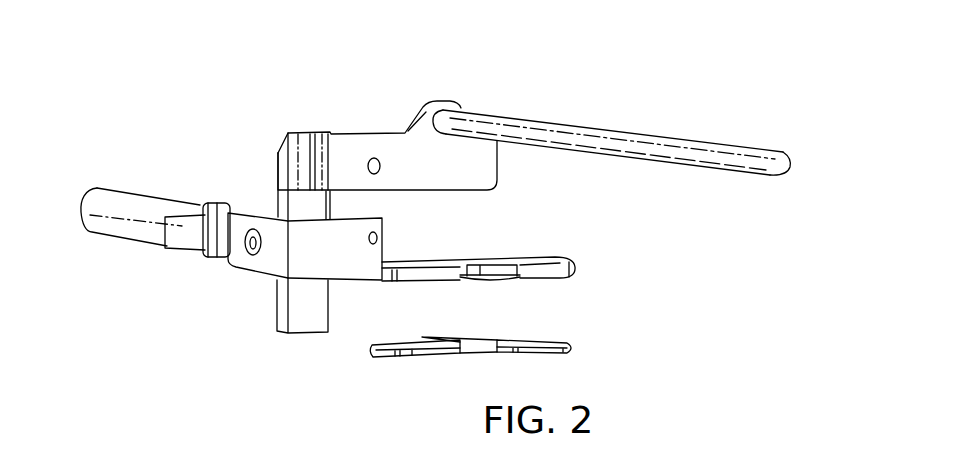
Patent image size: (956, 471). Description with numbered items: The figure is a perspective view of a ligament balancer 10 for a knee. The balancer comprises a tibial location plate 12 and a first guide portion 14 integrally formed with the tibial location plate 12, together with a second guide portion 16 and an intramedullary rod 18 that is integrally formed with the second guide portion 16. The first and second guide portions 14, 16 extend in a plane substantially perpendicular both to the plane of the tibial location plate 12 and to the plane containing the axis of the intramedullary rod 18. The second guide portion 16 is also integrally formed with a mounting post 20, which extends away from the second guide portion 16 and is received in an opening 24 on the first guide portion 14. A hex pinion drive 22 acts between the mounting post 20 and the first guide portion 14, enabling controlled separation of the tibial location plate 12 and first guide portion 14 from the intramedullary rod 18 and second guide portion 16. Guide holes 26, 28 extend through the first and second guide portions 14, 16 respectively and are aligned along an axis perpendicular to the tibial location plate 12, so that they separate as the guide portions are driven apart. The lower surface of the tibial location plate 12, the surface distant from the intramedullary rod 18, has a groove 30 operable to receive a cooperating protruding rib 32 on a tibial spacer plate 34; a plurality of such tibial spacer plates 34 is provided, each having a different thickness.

The ligament balancer 10 is at (591, 93).
The tibial location plate 12 is at (510, 293).
The first guide portion 14 is at (325, 256).
The second guide portion 16 is at (419, 147).
The intramedullary rod 18 is at (680, 147).
The mounting post 20 is at (266, 320).
The hex pinion drive 22 is at (245, 259).
The opening 24 is at (266, 210).
The guide hole 26 is at (378, 236).
The guide hole 28 is at (375, 158).
The groove 30 is at (495, 284).
The protruding rib 32 is at (470, 376).
The tibial spacer plate 34 is at (407, 366).